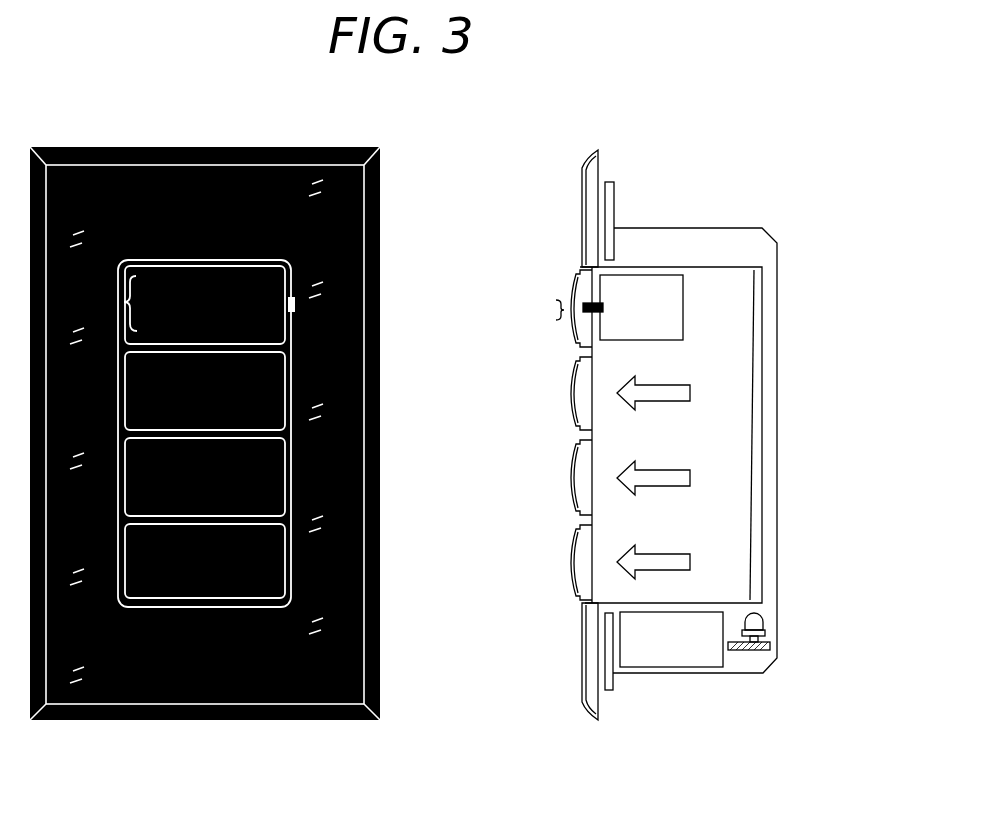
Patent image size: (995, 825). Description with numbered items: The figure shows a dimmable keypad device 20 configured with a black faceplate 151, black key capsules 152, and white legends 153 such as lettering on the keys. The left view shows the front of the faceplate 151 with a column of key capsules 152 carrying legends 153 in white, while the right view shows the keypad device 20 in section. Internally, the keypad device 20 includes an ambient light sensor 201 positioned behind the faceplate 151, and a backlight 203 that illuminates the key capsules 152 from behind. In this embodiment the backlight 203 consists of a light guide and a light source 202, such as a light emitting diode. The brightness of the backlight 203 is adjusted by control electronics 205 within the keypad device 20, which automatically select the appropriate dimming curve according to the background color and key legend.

The dimmable keypad device 20 is at (775, 693).
The black faceplate 151 is at (380, 650).
The black key capsules 152 is at (265, 290).
The white legends 153 is at (124, 302).
The ambient light sensor 201 is at (296, 305).
The light source 202 is at (765, 618).
The backlight 203 is at (753, 528).
The control electronics 205 is at (657, 668).